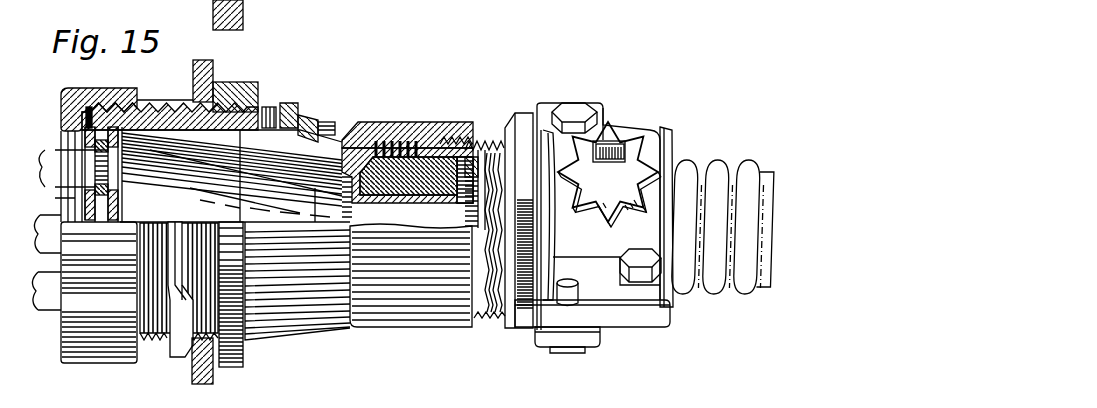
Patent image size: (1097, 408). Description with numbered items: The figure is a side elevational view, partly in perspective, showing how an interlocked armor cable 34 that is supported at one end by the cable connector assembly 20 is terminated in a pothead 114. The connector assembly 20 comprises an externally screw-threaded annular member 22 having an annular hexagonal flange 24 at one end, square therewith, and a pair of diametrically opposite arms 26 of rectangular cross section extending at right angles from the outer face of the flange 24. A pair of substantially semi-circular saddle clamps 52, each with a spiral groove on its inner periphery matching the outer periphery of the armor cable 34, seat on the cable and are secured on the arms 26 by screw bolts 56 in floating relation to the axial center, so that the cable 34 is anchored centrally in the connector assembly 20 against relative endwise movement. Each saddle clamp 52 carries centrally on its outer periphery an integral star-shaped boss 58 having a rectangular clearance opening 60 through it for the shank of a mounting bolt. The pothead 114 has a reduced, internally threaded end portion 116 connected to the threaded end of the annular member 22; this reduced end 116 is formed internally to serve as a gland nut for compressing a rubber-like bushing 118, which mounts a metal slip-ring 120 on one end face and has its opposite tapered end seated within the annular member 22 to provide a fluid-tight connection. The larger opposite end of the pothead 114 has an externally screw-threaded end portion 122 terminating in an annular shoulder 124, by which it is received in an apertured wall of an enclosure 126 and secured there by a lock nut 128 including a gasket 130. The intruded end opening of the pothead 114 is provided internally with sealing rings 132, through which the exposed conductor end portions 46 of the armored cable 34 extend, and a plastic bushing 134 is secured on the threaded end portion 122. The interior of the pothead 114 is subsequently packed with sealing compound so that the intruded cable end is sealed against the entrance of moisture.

The cable connector assembly 20 is at (602, 98).
The externally screw-threaded annular member 22 is at (490, 318).
The annular hexagonal flange 24 is at (526, 118).
The arms 26 is at (645, 322).
The interlocked armor cable 34 is at (763, 292).
The exposed conductor end portions 46 is at (43, 318).
The saddle clamps 52 is at (668, 136).
The screw bolts 56 is at (573, 103).
The star-shaped boss 58 is at (634, 132).
The rectangular clearance opening 60 is at (612, 148).
The pothead 114 is at (306, 307).
The reduced internally threaded end portion 116 is at (389, 126).
The rubber-like bushing 118 is at (431, 151).
The metal slip-ring 120 is at (346, 185).
The externally screw-threaded end portion 122 is at (151, 104).
The annular shoulder 124 is at (246, 360).
The enclosure 126 is at (214, 386).
The lock nut 128 is at (175, 358).
The gasket 130 is at (215, 100).
The sealing rings 132 is at (90, 196).
The plastic bushing 134 is at (81, 89).